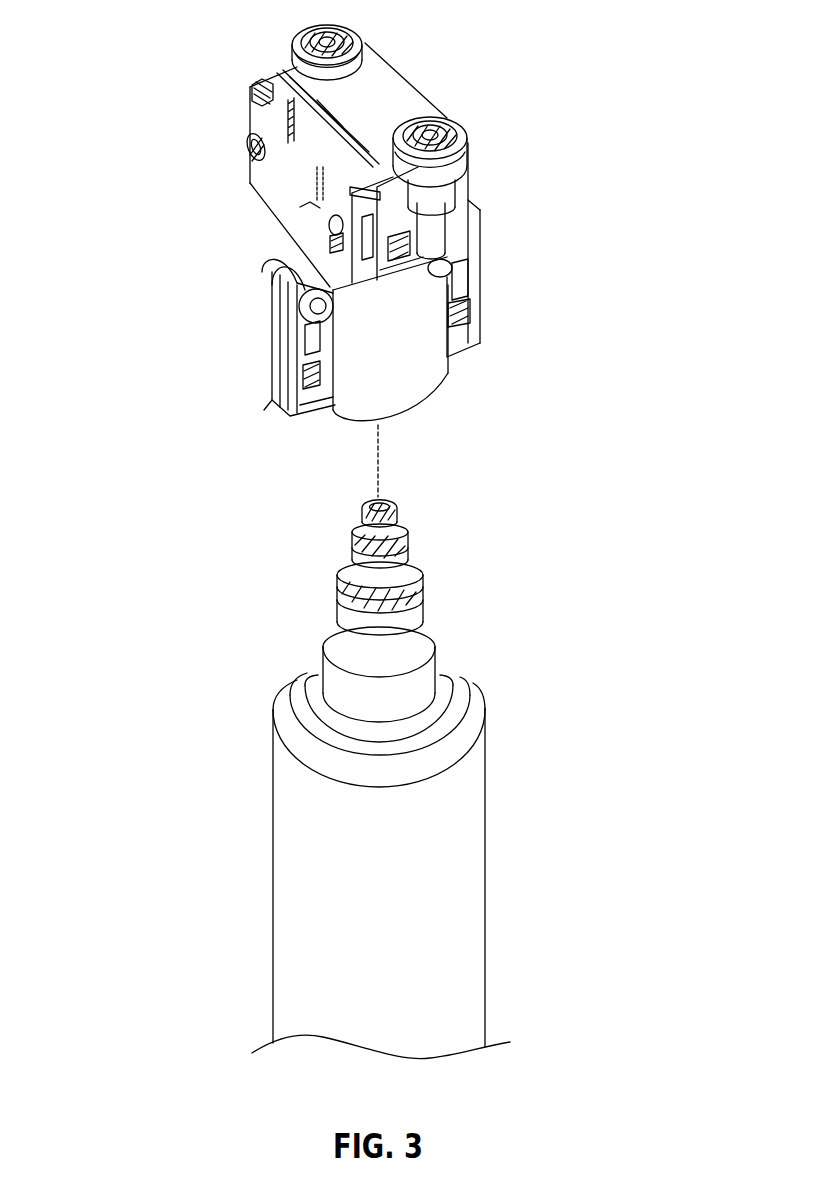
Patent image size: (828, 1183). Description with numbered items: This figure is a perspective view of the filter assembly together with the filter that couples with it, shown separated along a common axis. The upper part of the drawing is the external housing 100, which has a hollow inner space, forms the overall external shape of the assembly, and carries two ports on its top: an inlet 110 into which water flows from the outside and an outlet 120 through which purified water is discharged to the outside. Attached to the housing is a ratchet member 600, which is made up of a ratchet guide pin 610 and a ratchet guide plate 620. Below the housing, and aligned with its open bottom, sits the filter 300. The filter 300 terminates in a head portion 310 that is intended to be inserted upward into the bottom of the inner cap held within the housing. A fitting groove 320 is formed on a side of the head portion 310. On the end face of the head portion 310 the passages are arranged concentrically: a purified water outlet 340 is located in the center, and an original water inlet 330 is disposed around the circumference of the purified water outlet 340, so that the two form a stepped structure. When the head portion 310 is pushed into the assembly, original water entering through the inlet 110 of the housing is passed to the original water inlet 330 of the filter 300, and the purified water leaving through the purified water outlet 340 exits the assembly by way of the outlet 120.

The external housing 100 is at (437, 371).
The inlet 110 is at (340, 28).
The outlet 120 is at (433, 122).
The filter 300 is at (537, 972).
The head portion 310 is at (417, 603).
The fitting groove 320 is at (433, 638).
The original water inlet 330 is at (400, 513).
The purified water outlet 340 is at (378, 495).
The ratchet member 600 is at (234, 109).
The ratchet guide pin 610 is at (300, 207).
The ratchet guide plate 620 is at (257, 170).